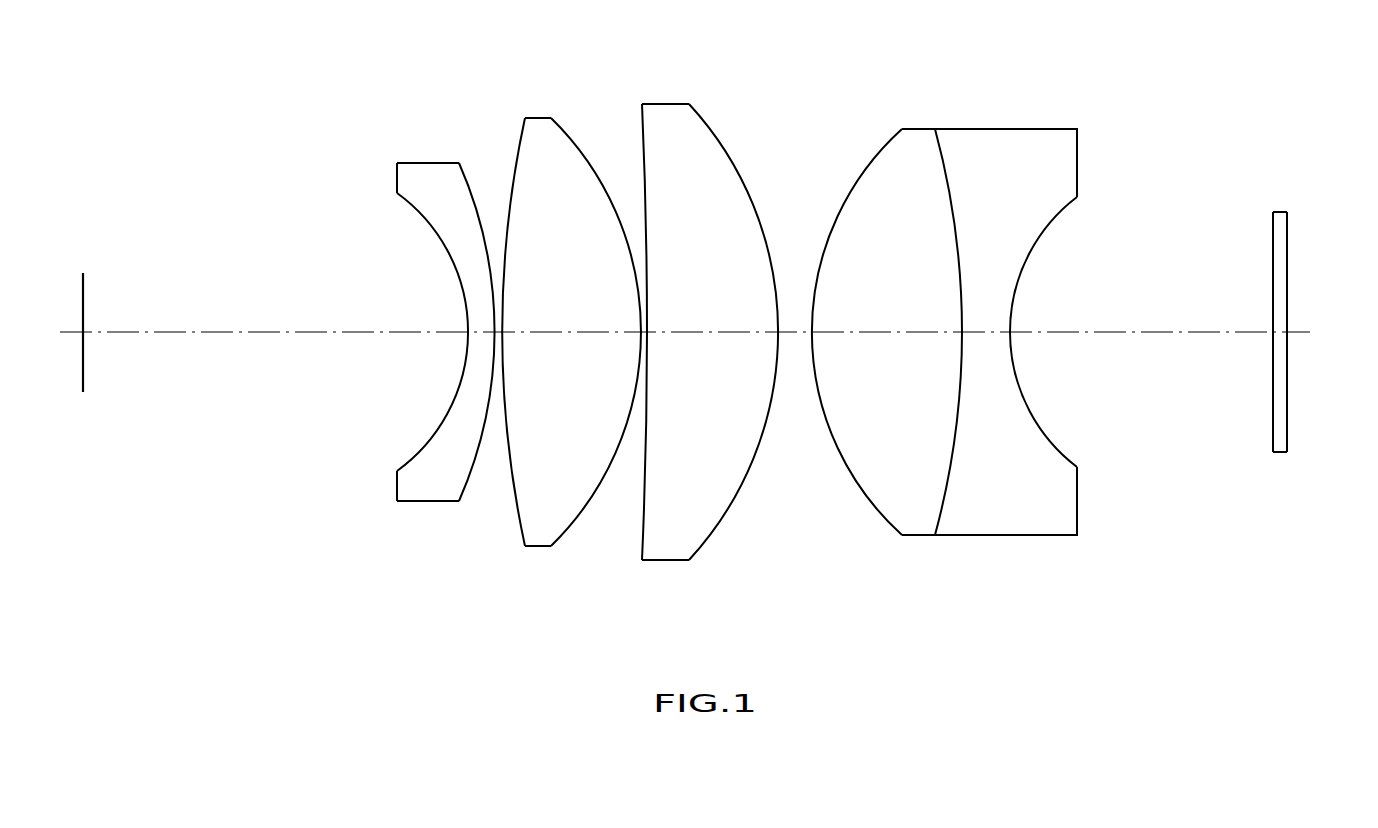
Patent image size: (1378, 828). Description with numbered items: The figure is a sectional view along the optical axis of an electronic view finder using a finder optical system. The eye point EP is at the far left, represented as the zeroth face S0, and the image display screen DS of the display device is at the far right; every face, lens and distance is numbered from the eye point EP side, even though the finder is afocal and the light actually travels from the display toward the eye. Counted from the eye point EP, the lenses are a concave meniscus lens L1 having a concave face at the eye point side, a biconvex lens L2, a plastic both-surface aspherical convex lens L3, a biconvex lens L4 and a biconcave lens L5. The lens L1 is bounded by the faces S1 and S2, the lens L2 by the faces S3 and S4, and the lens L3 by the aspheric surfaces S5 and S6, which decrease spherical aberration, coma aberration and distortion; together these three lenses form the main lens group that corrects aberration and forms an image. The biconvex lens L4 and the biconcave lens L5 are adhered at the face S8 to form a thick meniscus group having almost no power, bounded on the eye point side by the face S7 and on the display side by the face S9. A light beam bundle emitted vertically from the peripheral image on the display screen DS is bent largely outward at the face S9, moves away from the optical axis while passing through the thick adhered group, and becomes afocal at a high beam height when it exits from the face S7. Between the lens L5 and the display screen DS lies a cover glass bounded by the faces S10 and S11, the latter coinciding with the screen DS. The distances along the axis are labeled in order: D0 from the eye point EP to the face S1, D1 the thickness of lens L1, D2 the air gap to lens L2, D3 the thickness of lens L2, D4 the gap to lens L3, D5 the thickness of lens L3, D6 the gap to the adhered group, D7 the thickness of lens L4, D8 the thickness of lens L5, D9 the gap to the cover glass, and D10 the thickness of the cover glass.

The eye point EP is at (87, 320).
The zeroth face (eye position) S0 is at (86, 288).
The concave meniscus lens L1 is at (422, 346).
The bioconvex lens L2 is at (569, 350).
The plastic both-surface aspherical convex lens L3 is at (698, 344).
The bioconvex lens L4 is at (890, 341).
The bioconcave lens L5 is at (1033, 374).
The first face S1 is at (435, 234).
The second face S2 is at (473, 178).
The third face S3 is at (520, 127).
The fourth face S4 is at (568, 132).
The aspheric lens surface S5 is at (644, 125).
The aspheric lens surface S6 is at (707, 124).
The face of the adhered lens group at the eye point side S7 is at (881, 150).
The eighth face S8 is at (941, 150).
The face of the bioconcave lens at the display device side S9 is at (1043, 232).
The tenth face S10 is at (1273, 229).
The eleventh face S11 is at (1288, 229).
The image display screen DS is at (1281, 366).
The zeroth distance D0 is at (297, 334).
The first distance D1 is at (482, 335).
The second distance D2 is at (499, 335).
The third distance D3 is at (563, 335).
The fourth distance D4 is at (647, 335).
The fifth distance D5 is at (713, 335).
The sixth distance D6 is at (790, 335).
The seventh distance D7 is at (883, 335).
The eighth distance D8 is at (983, 335).
The ninth distance D9 is at (1140, 334).
The tenth distance D10 is at (1284, 334).